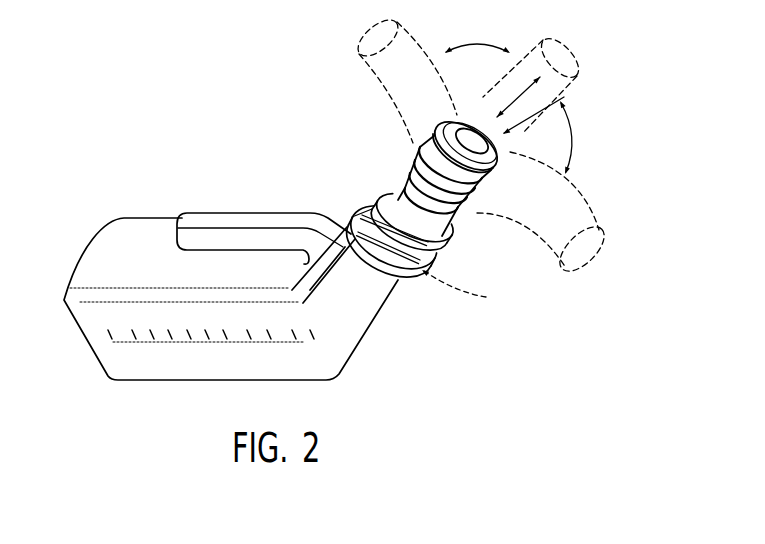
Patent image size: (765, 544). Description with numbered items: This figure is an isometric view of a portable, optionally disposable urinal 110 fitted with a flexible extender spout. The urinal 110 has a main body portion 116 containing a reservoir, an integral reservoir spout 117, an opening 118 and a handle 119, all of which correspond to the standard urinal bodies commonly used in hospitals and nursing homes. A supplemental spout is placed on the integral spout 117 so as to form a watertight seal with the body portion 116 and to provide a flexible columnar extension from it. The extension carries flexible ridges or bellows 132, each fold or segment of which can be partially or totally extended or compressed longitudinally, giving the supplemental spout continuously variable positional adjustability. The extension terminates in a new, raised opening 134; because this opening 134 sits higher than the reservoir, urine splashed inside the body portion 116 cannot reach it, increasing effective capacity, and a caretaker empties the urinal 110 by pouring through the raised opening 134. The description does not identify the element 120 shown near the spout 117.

The portable urinal 110 is at (181, 131).
The main body portion 116 is at (173, 369).
The spout 117 is at (368, 270).
The opening 118 is at (468, 290).
The handle 119 is at (250, 216).
The bayonet flange 120 is at (364, 217).
The flexible ridges or bellows 132 is at (417, 158).
The opening 134 is at (564, 97).